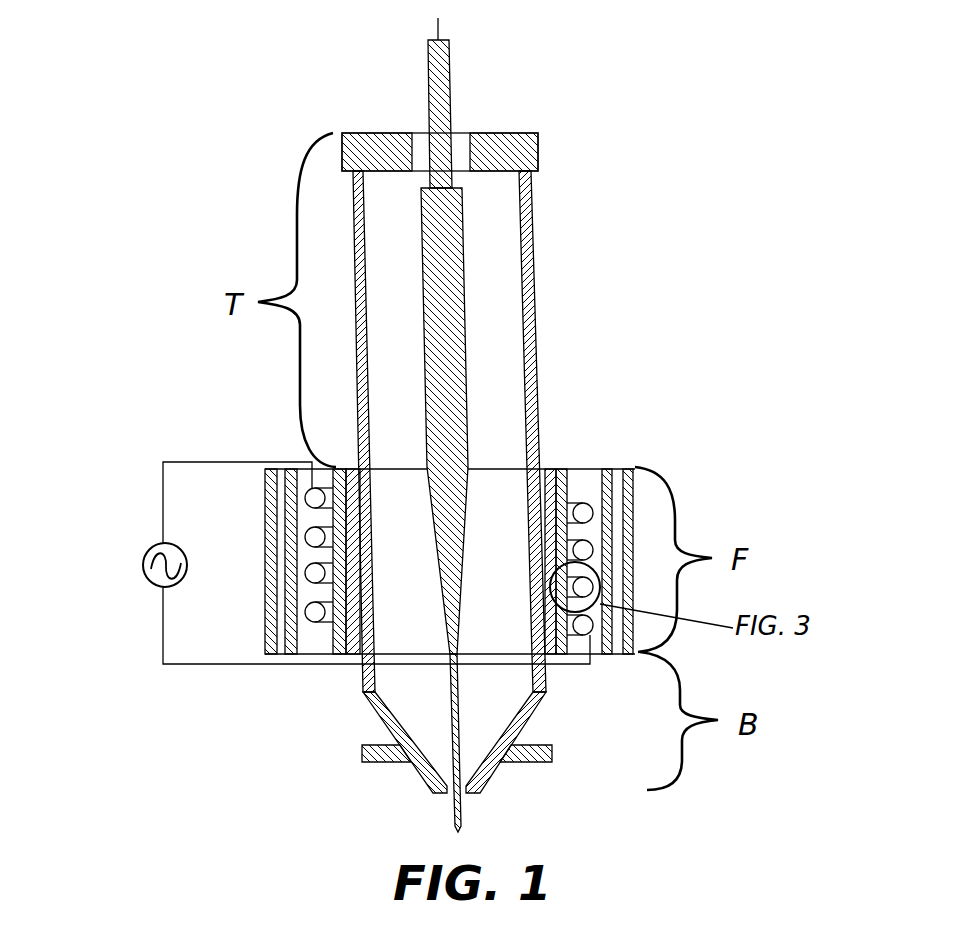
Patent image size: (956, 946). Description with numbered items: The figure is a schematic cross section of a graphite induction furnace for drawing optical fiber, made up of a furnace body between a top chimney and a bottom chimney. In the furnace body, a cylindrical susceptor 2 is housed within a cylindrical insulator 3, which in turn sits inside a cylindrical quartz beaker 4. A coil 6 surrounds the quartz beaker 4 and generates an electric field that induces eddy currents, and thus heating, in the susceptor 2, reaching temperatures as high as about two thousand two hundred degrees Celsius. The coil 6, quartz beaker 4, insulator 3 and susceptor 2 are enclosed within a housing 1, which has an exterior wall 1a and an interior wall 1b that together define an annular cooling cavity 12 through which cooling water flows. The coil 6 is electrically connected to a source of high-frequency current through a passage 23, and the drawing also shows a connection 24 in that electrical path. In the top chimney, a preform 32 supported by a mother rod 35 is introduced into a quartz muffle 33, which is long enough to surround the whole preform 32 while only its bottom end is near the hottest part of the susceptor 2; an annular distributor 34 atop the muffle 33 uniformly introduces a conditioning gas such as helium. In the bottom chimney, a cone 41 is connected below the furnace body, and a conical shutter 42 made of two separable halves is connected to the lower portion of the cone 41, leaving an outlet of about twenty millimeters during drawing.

The housing 1 is at (646, 532).
The exterior wall 1a is at (268, 494).
The interior wall 1b is at (283, 545).
The susceptor 2 is at (373, 612).
The insulator 3 is at (547, 467).
The quartz beaker 4 is at (333, 647).
The coil 6 is at (593, 510).
The cooling cavity 12 is at (615, 467).
The passage 23 is at (148, 585).
The wiring 24 is at (177, 668).
The preform 32 is at (462, 225).
The quartz muffle 33 is at (533, 272).
The annular distributor 34 is at (538, 150).
The mother rod 35 is at (448, 97).
The cone 41 is at (380, 717).
The conical shutter 42 is at (420, 773).